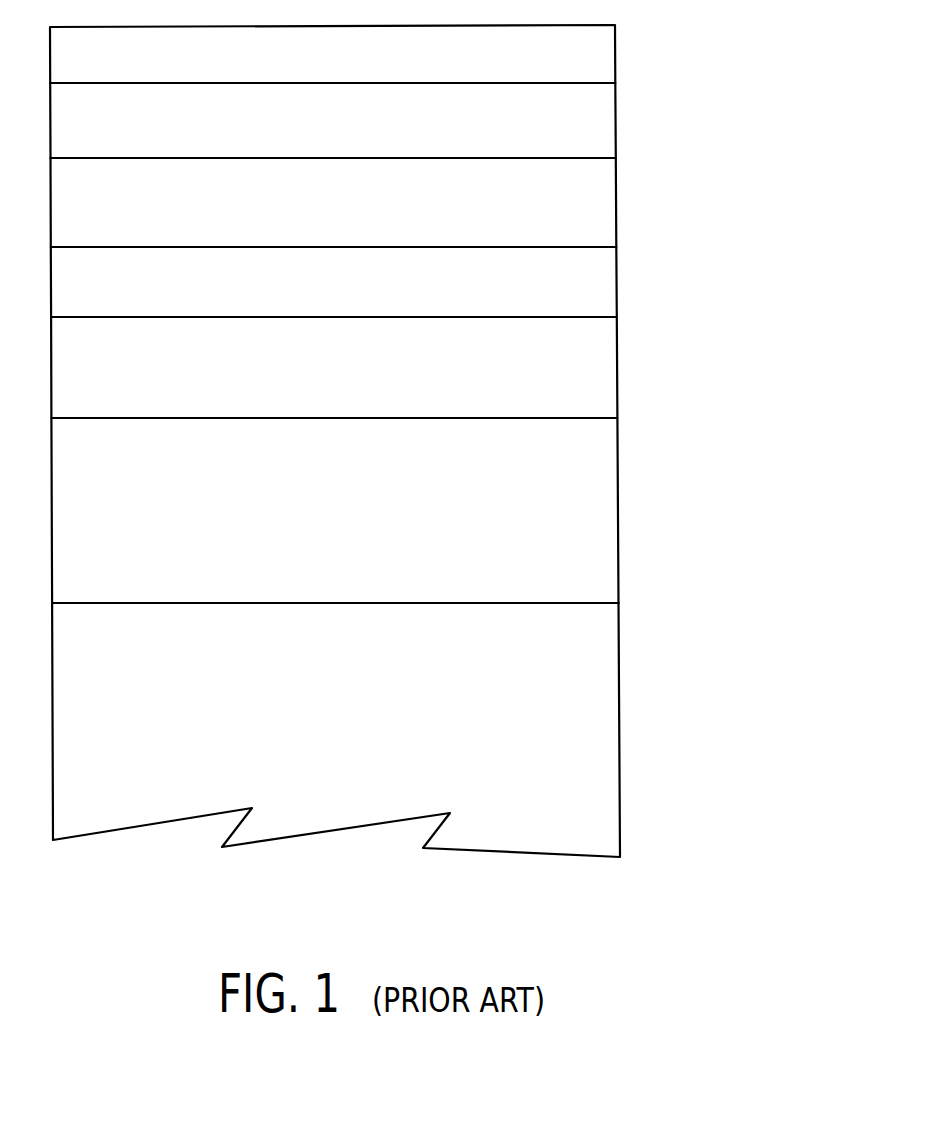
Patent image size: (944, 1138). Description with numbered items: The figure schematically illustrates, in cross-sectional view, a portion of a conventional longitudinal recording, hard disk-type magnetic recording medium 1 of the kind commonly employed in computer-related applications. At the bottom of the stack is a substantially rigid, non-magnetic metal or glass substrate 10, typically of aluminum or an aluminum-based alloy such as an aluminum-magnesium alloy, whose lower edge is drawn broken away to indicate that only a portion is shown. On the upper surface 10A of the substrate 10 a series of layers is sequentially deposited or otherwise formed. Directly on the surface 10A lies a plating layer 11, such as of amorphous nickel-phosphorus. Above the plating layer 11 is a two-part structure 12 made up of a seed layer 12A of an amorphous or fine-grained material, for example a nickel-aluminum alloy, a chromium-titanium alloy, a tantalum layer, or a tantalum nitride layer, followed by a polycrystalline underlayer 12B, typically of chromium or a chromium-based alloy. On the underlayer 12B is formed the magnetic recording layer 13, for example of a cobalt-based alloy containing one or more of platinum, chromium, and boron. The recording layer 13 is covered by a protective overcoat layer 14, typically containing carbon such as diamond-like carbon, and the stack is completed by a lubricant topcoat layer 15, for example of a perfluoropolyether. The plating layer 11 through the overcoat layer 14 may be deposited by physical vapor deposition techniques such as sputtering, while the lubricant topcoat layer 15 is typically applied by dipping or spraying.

The magnetic recording medium 1 is at (446, 441).
The substrate 10 is at (619, 748).
The surface 10A is at (575, 603).
The plating layer 11 is at (618, 529).
The seed layer and underlayer pair 12 is at (426, 332).
The seed layer 12A is at (394, 367).
The polycrystalline underlayer 12B is at (616, 273).
The magnetic recording layer 13 is at (616, 202).
The protective overcoat layer 14 is at (615, 117).
The lubricant topcoat layer 15 is at (615, 52).